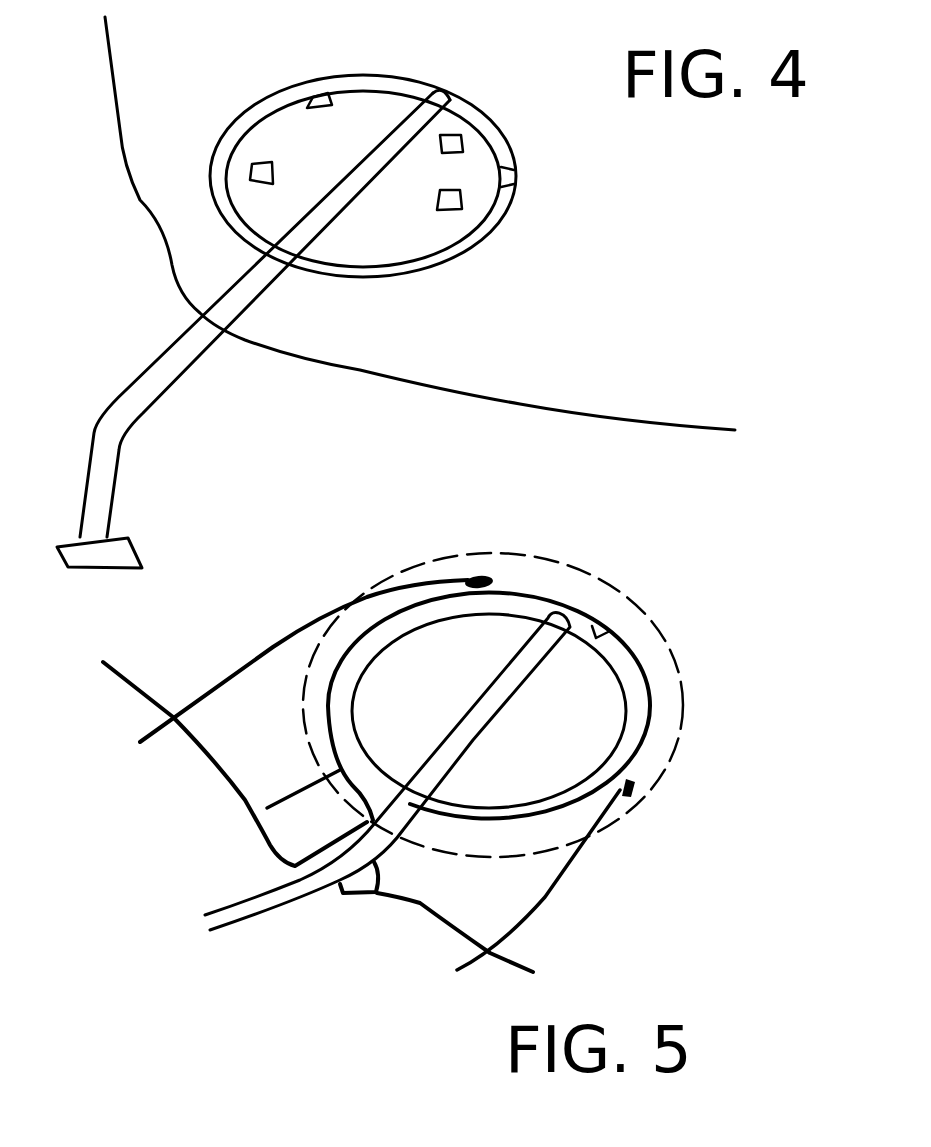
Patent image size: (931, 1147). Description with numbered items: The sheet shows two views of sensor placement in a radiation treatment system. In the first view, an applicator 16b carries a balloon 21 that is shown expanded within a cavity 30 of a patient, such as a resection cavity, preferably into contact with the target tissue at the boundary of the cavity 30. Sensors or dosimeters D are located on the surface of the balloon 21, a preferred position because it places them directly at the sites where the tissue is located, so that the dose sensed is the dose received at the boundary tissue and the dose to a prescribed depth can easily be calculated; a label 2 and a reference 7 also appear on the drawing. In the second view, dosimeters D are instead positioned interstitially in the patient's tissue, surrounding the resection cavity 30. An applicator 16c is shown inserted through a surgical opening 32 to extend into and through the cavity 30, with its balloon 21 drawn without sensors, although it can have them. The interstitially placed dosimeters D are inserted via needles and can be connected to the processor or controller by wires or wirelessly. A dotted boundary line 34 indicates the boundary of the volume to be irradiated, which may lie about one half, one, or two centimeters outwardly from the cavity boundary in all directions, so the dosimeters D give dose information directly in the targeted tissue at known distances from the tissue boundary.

In FIG. 4, the tag 2 is at (325, 93).
In FIG. 4, the dosimeters D is at (250, 172).
In FIG. 5, the dosimeters D is at (470, 577).
In FIG. 4, the cavity 30 is at (510, 178).
In FIG. 5, the cavity 30 is at (597, 633).
In FIG. 4, the balloon 21 is at (428, 258).
In FIG. 5, the balloon 21 is at (610, 668).
In FIG. 4, the applicator 16b is at (180, 375).
In FIG. 5, the dotted boundary line 34 is at (583, 578).
In FIG. 5, the housing 7 is at (667, 708).
In FIG. 5, the applicator 16c is at (258, 895).
In FIG. 5, the surgical opening 32 is at (375, 893).